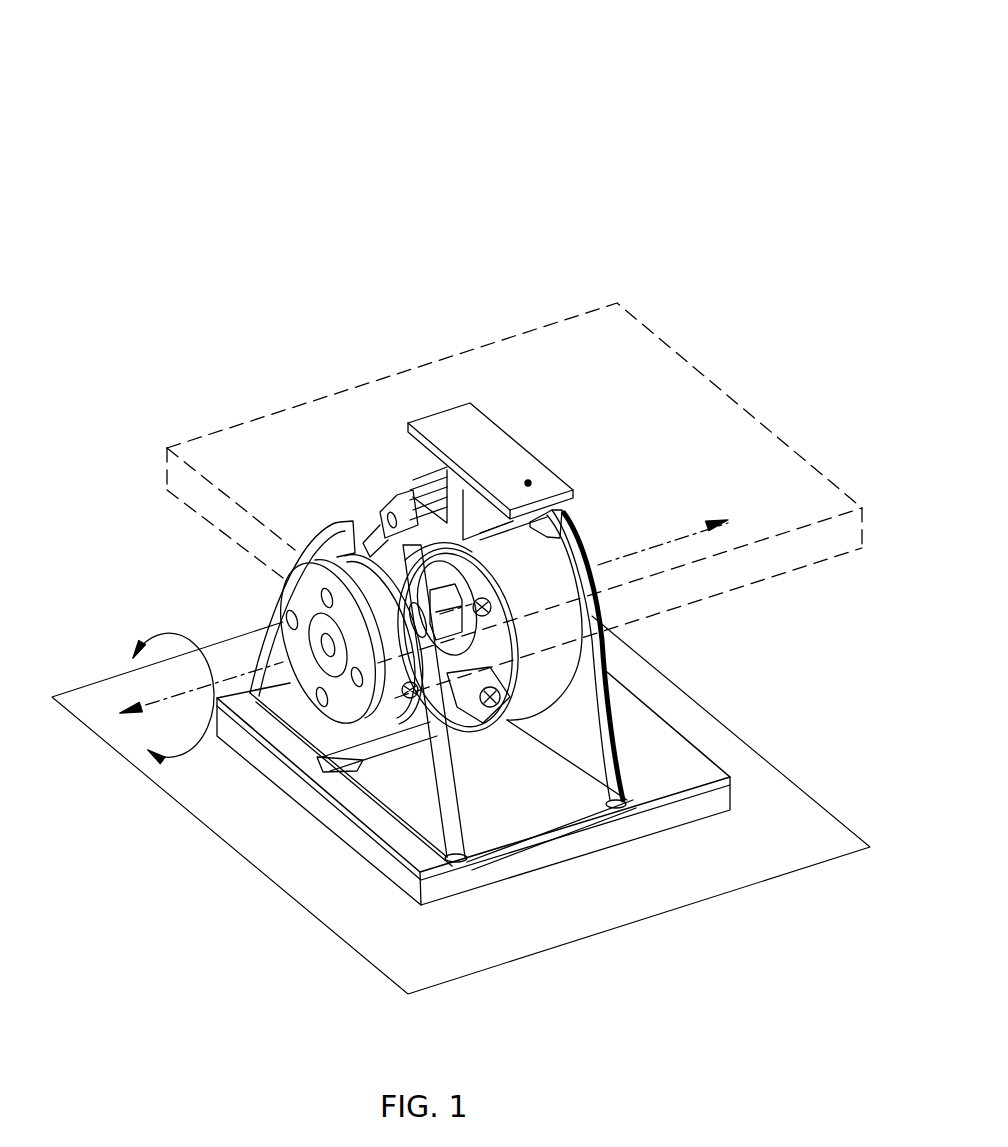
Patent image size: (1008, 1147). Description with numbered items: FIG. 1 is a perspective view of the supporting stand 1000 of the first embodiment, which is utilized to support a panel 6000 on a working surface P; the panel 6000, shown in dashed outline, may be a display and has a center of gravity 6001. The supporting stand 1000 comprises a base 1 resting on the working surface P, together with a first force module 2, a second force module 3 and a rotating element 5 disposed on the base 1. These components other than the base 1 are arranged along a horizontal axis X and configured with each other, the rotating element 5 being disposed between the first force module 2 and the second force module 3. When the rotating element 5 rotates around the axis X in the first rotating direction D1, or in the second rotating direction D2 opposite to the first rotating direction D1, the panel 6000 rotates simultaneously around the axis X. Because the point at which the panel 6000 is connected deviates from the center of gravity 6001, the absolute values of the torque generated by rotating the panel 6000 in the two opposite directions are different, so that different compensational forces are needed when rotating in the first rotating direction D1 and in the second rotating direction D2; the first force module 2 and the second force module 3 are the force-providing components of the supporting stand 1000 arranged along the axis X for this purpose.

The supporting stand 1000 is at (231, 37).
The base 1 is at (678, 735).
The first force module 2 is at (435, 562).
The second force module 3 is at (290, 607).
The rotating element 5 is at (507, 452).
The panel 6000 is at (510, 338).
The center of gravity 6001 is at (528, 483).
The working surface P is at (772, 795).
The horizontal axis X is at (413, 626).
The first rotating direction D1 is at (162, 685).
The second rotating direction D2 is at (177, 774).